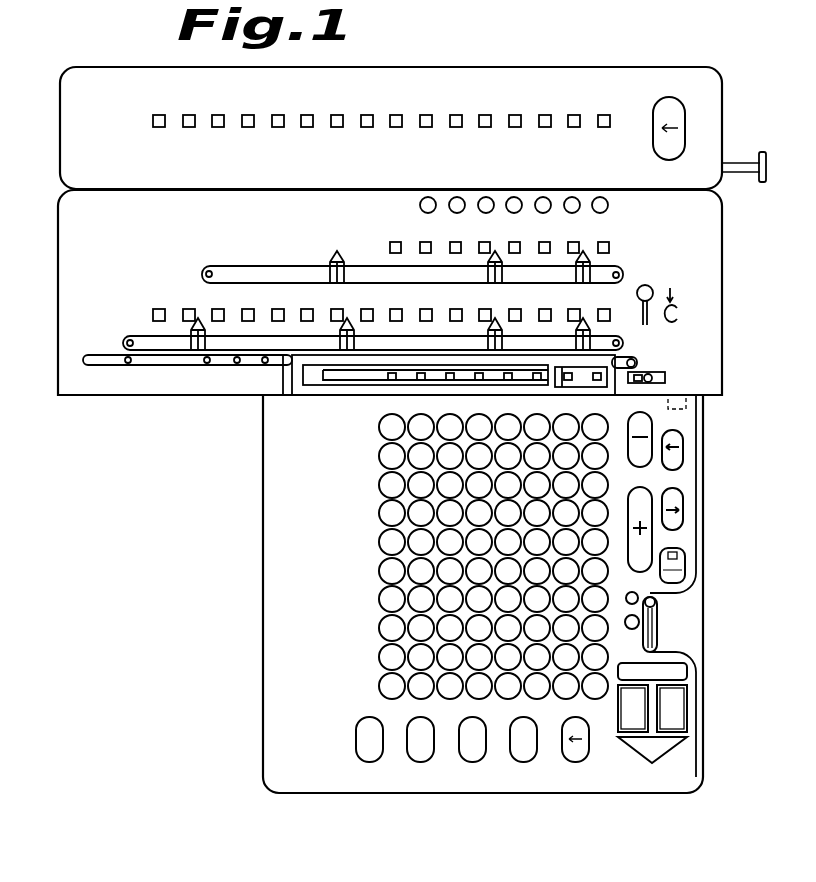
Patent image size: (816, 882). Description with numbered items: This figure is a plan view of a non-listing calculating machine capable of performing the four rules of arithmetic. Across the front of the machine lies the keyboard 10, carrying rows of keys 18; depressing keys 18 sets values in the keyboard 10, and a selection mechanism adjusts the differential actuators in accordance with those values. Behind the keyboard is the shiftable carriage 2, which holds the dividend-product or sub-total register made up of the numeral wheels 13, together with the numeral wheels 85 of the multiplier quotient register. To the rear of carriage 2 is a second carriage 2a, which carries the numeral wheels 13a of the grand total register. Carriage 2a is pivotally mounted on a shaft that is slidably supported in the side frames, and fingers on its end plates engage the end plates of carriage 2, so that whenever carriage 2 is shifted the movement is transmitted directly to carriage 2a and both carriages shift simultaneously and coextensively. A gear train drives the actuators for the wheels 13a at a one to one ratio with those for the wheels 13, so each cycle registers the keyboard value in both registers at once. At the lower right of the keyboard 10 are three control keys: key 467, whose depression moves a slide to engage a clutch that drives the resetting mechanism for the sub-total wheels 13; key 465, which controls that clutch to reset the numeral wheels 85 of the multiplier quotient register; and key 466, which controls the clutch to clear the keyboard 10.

The carriage 2a is at (618, 86).
The numeral wheels 13a is at (571, 117).
The carriage 2 is at (60, 374).
The numeral wheels 85 is at (607, 242).
The numeral wheels 13 is at (481, 310).
The keyboard 10 is at (270, 662).
The keys 18 is at (385, 572).
The key 465 is at (618, 706).
The key 466 is at (652, 757).
The key 467 is at (687, 710).